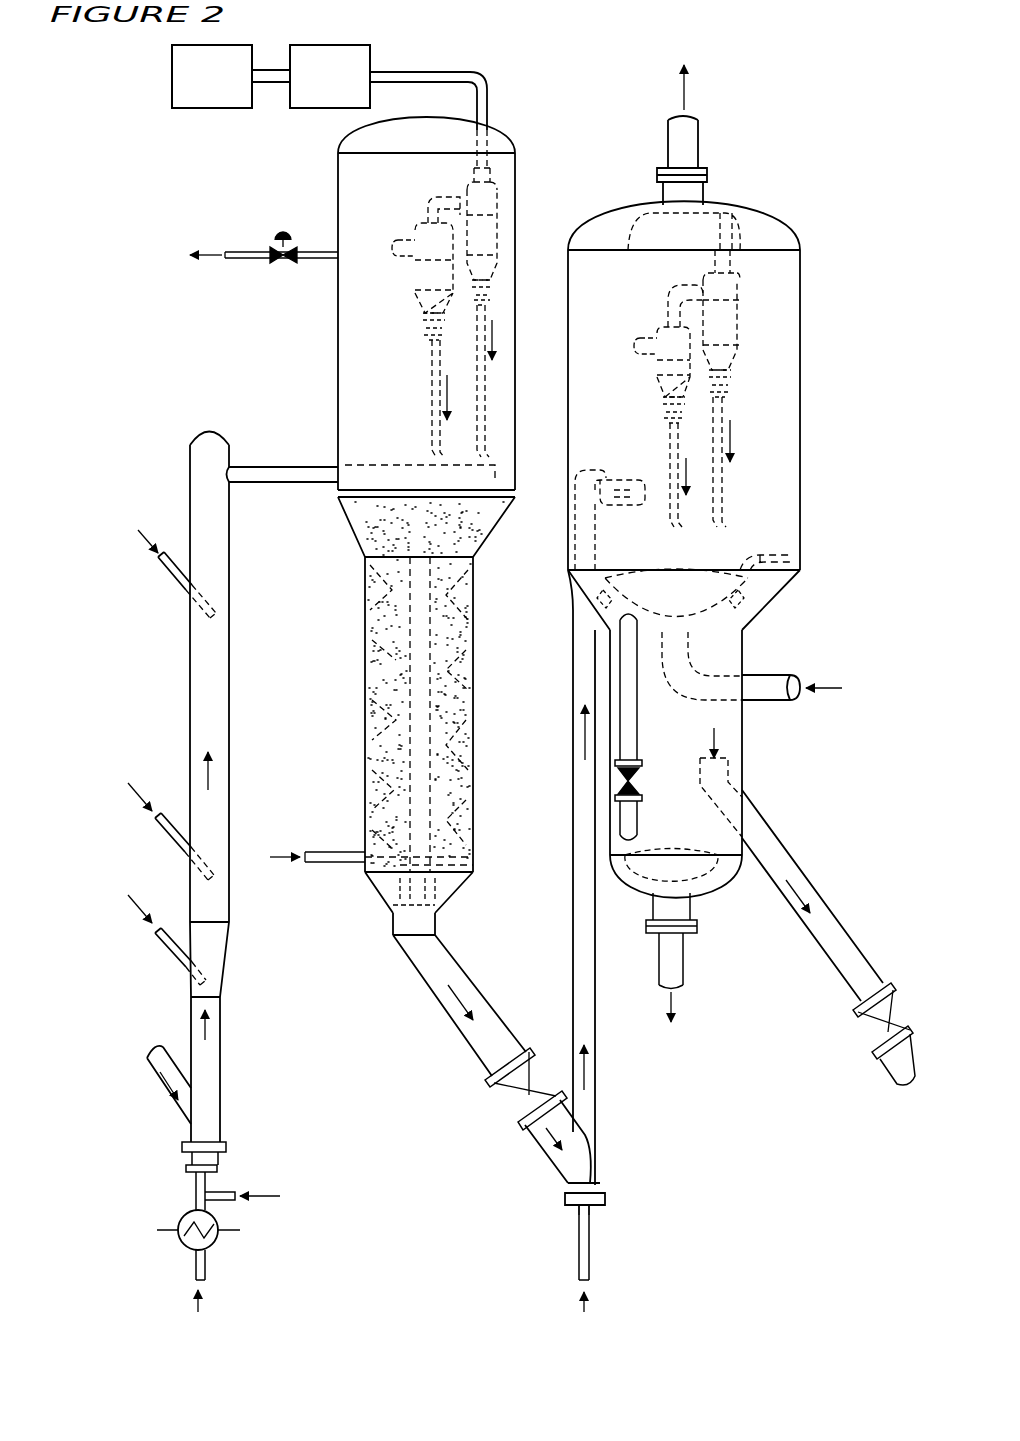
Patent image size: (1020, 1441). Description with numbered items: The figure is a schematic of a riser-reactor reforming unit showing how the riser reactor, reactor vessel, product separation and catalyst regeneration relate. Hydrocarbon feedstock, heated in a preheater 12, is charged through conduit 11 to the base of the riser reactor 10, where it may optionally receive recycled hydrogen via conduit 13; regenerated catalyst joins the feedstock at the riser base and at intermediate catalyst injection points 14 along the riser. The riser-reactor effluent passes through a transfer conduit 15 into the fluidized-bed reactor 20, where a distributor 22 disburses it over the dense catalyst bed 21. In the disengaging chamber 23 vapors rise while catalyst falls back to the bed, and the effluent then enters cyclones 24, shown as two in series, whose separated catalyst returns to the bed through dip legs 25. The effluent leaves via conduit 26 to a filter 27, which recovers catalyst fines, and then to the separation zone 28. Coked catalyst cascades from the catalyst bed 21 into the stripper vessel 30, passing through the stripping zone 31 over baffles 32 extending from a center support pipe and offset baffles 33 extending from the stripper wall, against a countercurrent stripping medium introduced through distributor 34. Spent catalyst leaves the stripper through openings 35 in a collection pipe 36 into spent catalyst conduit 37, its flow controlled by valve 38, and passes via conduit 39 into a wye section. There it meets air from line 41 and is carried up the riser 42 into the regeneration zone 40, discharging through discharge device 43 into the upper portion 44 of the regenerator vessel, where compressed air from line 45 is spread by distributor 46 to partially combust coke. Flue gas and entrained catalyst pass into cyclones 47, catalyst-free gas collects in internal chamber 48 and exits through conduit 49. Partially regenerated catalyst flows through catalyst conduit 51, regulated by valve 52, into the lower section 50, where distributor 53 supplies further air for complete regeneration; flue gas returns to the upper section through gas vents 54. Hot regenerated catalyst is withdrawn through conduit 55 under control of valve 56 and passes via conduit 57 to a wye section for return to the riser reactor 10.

The riser reactor 10 is at (190, 655).
The conduit 11 is at (205, 1264).
The preheater 12 is at (178, 1218).
The conduit 13 is at (232, 1192).
The catalyst injection points 14 is at (158, 572).
The transfer conduit 15 is at (285, 467).
The fluidized-bed reactor 20 is at (338, 206).
The dense catalyst bed 21 is at (434, 533).
The distributor 22 is at (386, 465).
The disengaging chamber 23 is at (386, 317).
The cyclones 24 is at (497, 244).
The dip legs 25 is at (432, 405).
The conduit 26 is at (490, 90).
The filter 27 is at (346, 88).
The separation zone 28 is at (228, 88).
The stripper vessel 30 is at (365, 676).
The stripping zone 31 is at (410, 706).
The baffles 32 is at (368, 580).
The offset baffles 33 is at (473, 612).
The distributor 34 is at (334, 852).
The openings 35 is at (393, 903).
The collection pipe 36 is at (455, 896).
The spent catalyst conduit 37 is at (447, 1018).
The valve 38 is at (498, 1085).
The conduit 39 is at (552, 1170).
The regeneration zone 40 is at (800, 412).
The line 41 is at (592, 1248).
The riser 42 is at (573, 692).
The discharge device 43 is at (612, 508).
The upper portion of regenerator vessel 44 is at (640, 433).
The line 45 is at (770, 675).
The distributor 46 is at (730, 570).
The cyclones 47 is at (740, 306).
The internal chamber 48 is at (690, 245).
The conduit 49 is at (668, 140).
The lower section 50 is at (742, 740).
The catalyst conduit 51 is at (637, 725).
The valve 52 is at (640, 784).
The distributor 53 is at (692, 856).
The gas vents 54 is at (760, 604).
The conduit 55 is at (826, 868).
The valve 56 is at (852, 1018).
The conduit 57 is at (880, 1058).